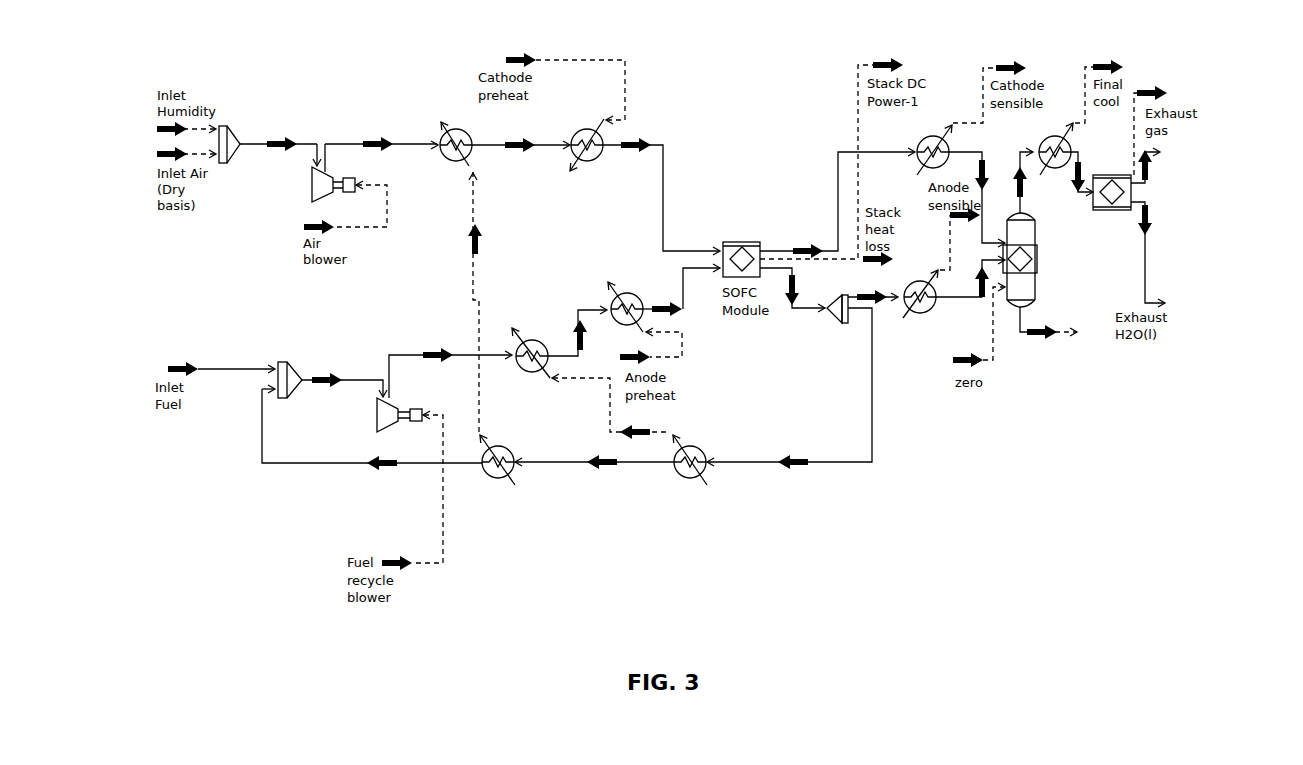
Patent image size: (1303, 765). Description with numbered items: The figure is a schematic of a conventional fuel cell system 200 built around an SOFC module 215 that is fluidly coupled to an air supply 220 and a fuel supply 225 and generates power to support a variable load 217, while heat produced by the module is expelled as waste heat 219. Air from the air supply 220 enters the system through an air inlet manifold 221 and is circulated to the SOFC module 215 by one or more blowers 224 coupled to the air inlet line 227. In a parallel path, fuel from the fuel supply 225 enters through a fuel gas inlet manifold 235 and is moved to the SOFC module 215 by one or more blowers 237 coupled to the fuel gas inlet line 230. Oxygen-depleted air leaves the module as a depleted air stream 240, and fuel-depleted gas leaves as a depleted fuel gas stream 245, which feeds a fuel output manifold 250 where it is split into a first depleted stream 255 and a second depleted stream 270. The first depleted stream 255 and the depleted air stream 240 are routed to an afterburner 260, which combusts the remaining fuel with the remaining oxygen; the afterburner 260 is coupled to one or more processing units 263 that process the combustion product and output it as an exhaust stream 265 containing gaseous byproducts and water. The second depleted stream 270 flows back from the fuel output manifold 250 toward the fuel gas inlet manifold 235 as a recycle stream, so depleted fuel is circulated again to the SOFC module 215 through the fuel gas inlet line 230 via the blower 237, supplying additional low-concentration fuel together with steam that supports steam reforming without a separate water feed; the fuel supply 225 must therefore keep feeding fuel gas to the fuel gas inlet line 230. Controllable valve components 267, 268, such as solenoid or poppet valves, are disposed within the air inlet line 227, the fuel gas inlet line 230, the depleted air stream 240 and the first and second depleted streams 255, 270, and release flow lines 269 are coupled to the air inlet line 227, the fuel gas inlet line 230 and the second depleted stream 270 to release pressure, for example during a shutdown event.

The fuel cell system 200 is at (1038, 507).
The SOFC module 215 is at (735, 232).
The variable load 217 is at (875, 62).
The waste heat 219 is at (893, 258).
The air supply 220 is at (190, 113).
The air inlet manifold 221 is at (240, 140).
The blower 224 is at (313, 188).
The fuel supply 225 is at (218, 368).
The air inlet line 227 is at (665, 165).
The fuel gas inlet line 230 is at (662, 268).
The fuel gas inlet manifold 235 is at (270, 387).
The blower 237 is at (370, 425).
The depleted air stream 240 is at (837, 195).
The depleted fuel gas stream 245 is at (792, 310).
The fuel output manifold 250 is at (850, 330).
The first depleted stream 255 is at (973, 300).
The afterburner 260 is at (1037, 247).
The processing unit 263 is at (1105, 211).
The exhaust stream 265 is at (1193, 200).
The controllable valve component 267 is at (915, 318).
The controllable valve component 268 is at (455, 128).
The release flow line 269 is at (473, 208).
The second depleted stream 270 is at (750, 464).